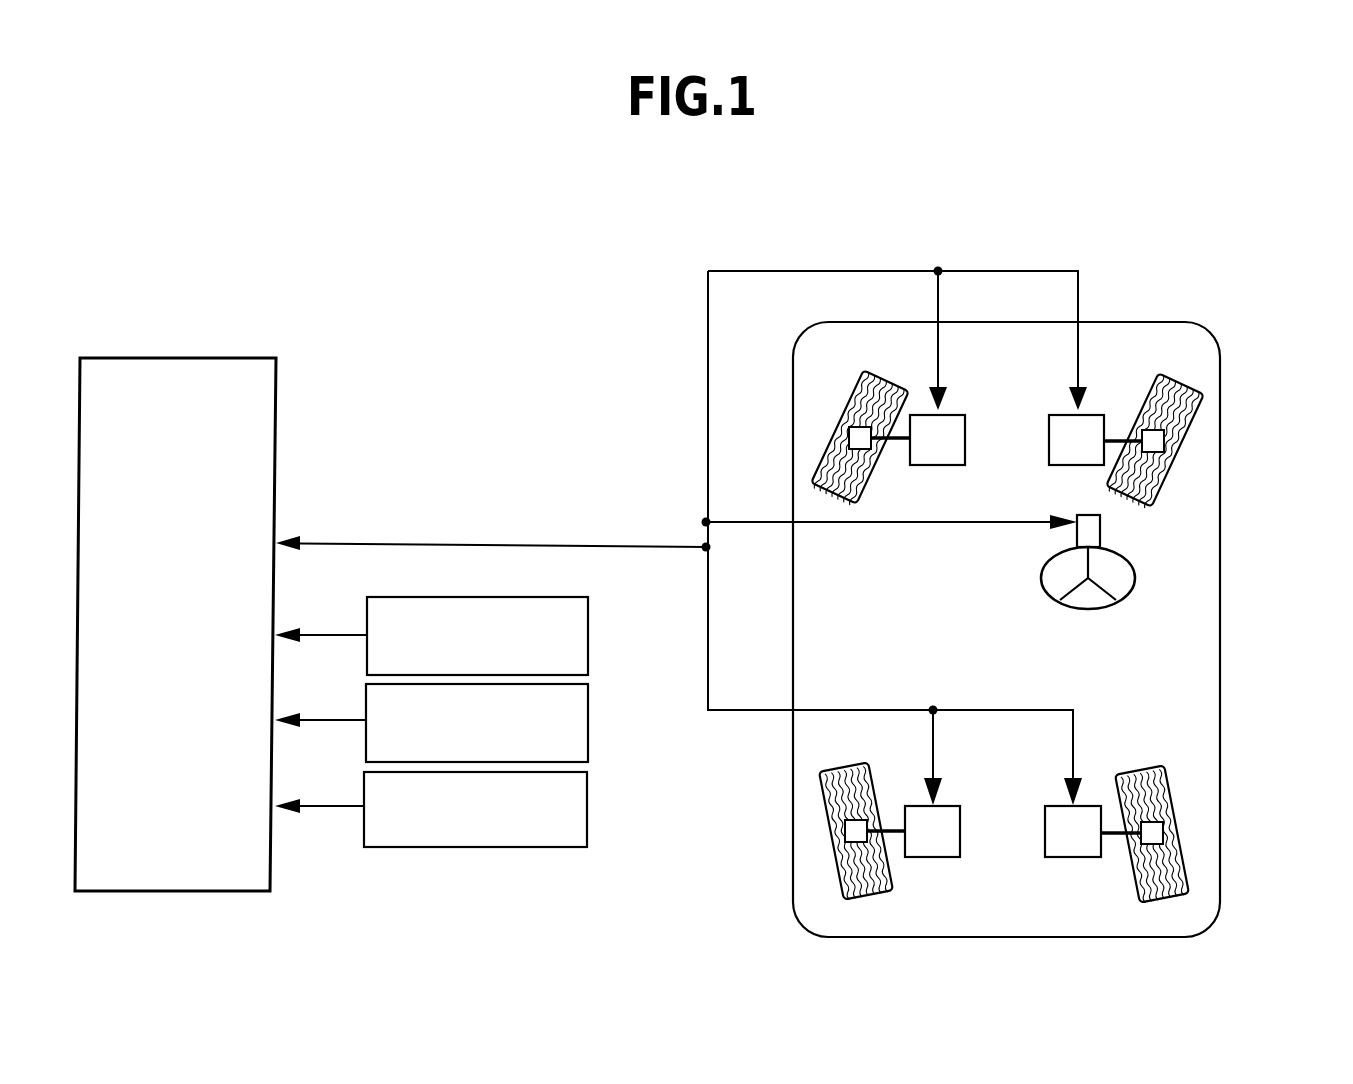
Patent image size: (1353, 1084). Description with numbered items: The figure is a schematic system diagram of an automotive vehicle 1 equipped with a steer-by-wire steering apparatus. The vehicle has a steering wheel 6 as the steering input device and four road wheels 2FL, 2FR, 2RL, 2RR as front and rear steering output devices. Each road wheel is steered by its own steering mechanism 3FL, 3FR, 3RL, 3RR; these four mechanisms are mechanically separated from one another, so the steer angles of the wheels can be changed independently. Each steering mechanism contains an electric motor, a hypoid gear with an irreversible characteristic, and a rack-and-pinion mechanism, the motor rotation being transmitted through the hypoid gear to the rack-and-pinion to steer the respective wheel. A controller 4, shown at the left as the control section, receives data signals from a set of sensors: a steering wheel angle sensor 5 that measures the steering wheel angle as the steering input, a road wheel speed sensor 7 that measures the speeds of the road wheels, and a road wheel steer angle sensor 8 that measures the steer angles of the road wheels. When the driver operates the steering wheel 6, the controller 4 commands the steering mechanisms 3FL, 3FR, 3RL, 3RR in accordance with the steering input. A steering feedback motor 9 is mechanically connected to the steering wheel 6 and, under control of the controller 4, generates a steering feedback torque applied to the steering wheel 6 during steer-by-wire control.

The automotive vehicle 1 is at (1166, 249).
The front left road wheel 2FL is at (828, 445).
The front right road wheel 2FR is at (1187, 442).
The rear left road wheel 2RL is at (830, 843).
The rear right road wheel 2RR is at (1185, 838).
The steering mechanism 3FL is at (938, 466).
The steering mechanism 3FR is at (1049, 455).
The steering mechanism 3RL is at (940, 858).
The steering mechanism 3RR is at (1073, 858).
The controller 4 is at (276, 420).
The steering wheel angle sensor 5 is at (589, 632).
The steering wheel 6 is at (1041, 576).
The road wheel speed sensor 7 is at (589, 722).
The road wheel steer angle sensor 8 is at (589, 807).
The steering feedback motor 9 is at (1101, 530).